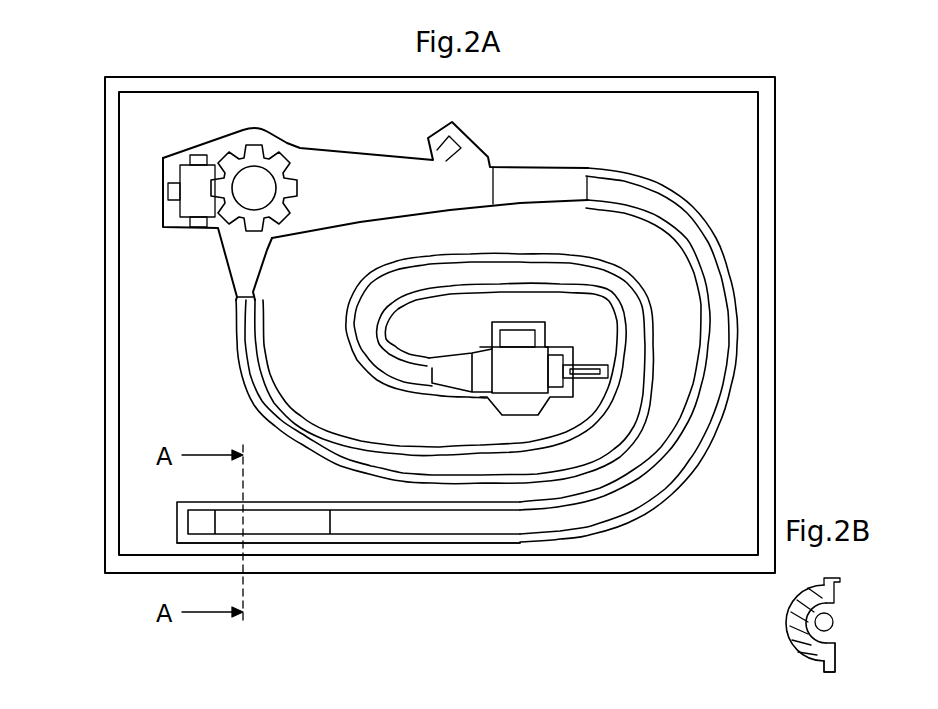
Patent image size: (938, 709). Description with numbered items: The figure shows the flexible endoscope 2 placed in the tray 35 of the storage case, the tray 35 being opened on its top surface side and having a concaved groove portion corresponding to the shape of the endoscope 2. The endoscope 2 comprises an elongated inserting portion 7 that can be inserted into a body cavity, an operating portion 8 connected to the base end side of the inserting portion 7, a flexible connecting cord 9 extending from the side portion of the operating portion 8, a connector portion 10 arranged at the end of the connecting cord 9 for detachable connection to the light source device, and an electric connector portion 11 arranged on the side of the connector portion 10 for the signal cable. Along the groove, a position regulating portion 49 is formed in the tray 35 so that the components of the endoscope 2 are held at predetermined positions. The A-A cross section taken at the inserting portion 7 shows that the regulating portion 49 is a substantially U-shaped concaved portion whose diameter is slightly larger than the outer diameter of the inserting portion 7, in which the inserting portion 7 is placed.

In FIG. 2A, the endoscope 2 is at (675, 195).
In FIG. 2A, the inserting portion 7 is at (500, 532).
In FIG. 2B, the inserting portion 7 is at (802, 655).
In FIG. 2A, the operating portion 8 is at (362, 175).
In FIG. 2A, the connecting cord 9 is at (415, 467).
In FIG. 2A, the connector portion 10 is at (532, 385).
In FIG. 2A, the electric connector portion 11 is at (527, 330).
In FIG. 2A, the tray 35 is at (715, 83).
In FIG. 2A, the position regulating portion 49 is at (312, 540).
In FIG. 2B, the position regulating portion 49 is at (790, 622).